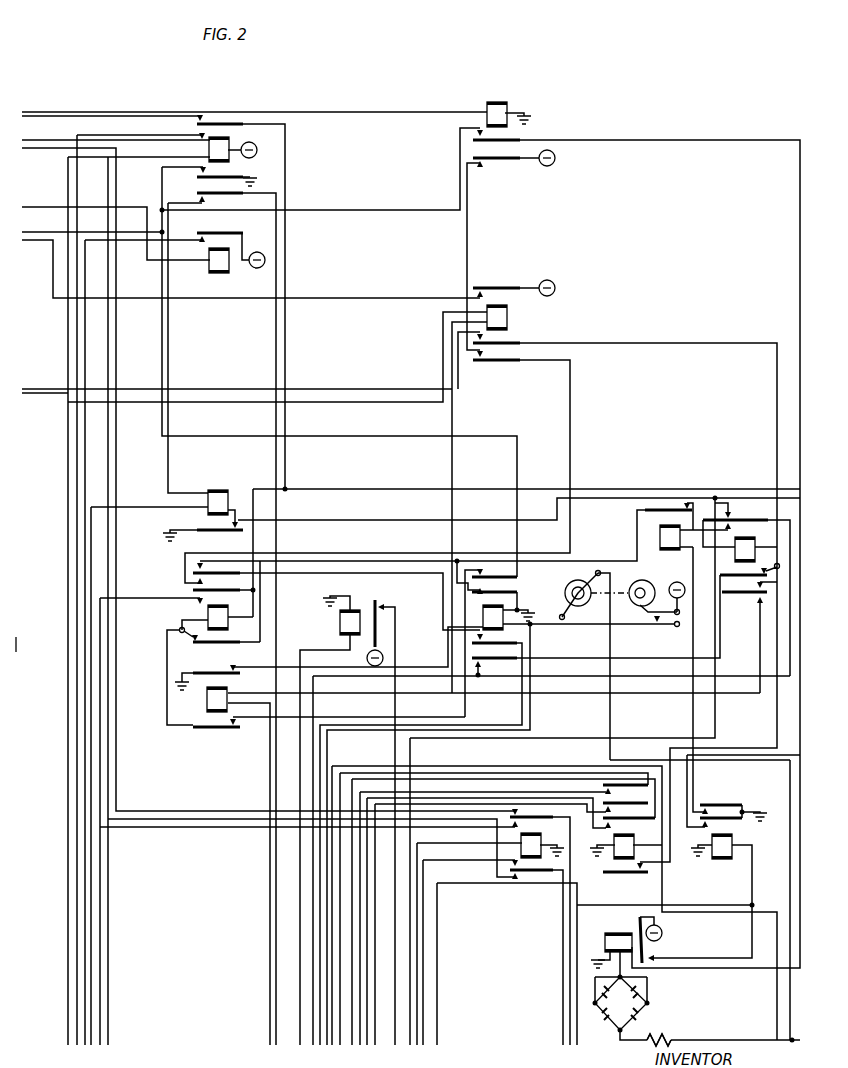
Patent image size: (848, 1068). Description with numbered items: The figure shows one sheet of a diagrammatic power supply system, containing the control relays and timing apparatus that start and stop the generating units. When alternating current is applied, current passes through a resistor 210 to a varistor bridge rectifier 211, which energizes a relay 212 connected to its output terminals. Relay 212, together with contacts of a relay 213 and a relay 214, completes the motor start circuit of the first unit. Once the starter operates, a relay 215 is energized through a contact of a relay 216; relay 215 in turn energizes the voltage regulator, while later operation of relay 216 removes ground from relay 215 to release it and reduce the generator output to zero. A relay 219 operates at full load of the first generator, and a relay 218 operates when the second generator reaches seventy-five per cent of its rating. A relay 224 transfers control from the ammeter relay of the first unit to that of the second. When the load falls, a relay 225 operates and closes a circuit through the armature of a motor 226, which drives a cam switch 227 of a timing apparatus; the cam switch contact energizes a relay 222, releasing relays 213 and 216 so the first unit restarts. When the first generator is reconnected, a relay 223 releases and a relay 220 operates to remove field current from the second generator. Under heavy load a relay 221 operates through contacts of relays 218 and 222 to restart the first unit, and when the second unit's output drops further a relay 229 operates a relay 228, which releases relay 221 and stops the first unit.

The resistor 210 is at (660, 1040).
The varistor bridge rectifier 211 is at (647, 1003).
The relay 212 is at (637, 948).
The relay 213 is at (208, 614).
The relay 214 is at (216, 137).
The relay 215 is at (505, 315).
The relay 216 is at (216, 712).
The relay 218 is at (624, 858).
The relay 219 is at (218, 272).
The relay 220 is at (352, 611).
The relay 221 is at (745, 537).
The relay 222 is at (503, 628).
The relay 223 is at (505, 108).
The relay 224 is at (531, 858).
The relay 225 is at (218, 490).
The motor 226 is at (582, 581).
The cam switch 227 is at (646, 581).
The relay 228 is at (668, 525).
The relay 229 is at (732, 847).